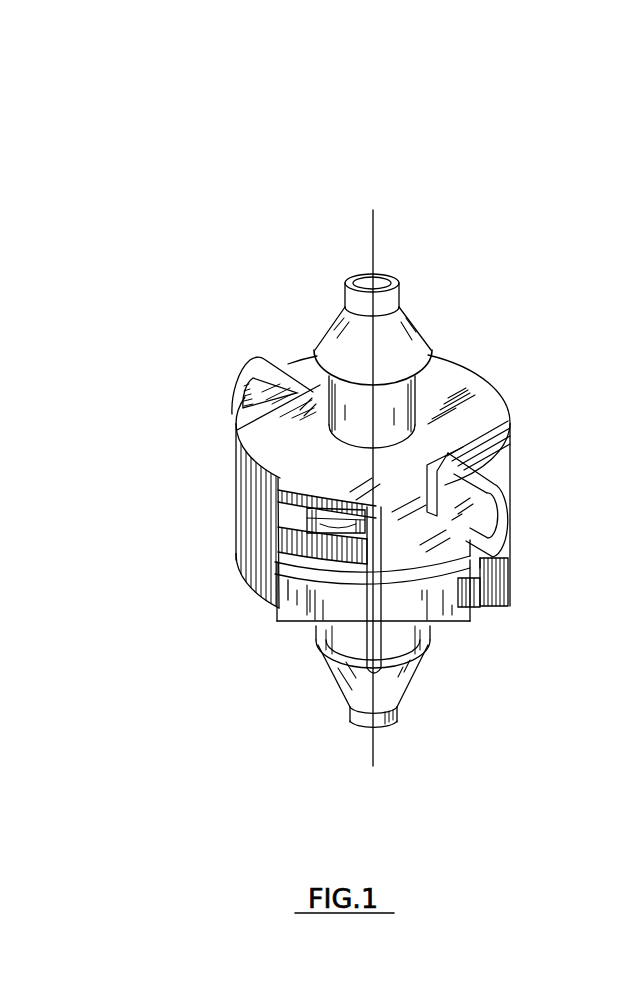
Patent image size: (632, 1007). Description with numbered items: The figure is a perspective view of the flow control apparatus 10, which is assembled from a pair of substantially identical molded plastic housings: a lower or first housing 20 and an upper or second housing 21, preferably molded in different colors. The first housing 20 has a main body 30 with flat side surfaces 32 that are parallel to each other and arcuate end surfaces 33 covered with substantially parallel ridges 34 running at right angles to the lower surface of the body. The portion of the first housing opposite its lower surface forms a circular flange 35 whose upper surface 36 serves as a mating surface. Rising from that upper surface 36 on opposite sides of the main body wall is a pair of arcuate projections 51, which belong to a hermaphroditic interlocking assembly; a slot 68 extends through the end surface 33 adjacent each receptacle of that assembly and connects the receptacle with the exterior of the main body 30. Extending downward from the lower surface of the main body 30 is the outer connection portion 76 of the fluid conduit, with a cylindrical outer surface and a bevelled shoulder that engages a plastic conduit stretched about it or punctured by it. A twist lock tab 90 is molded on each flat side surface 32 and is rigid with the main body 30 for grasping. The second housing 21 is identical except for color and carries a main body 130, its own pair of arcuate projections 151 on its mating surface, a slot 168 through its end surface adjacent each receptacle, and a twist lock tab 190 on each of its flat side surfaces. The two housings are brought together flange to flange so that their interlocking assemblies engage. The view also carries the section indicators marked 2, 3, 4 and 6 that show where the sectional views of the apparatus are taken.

The flow control apparatus 10 is at (470, 357).
The first housing 20 is at (244, 606).
The second housing 21 is at (496, 364).
The main body 30 is at (262, 615).
The flat side surfaces 32 is at (304, 600).
The arcuate end surfaces 33 is at (250, 570).
The ridges 34 is at (247, 543).
The circular flange 35 is at (285, 615).
The upper surface 36 is at (421, 563).
The arcuate projections 51 is at (325, 511).
The slot 68 is at (486, 580).
The outer connection portion 76 is at (400, 700).
The twist lock tab 90 is at (367, 641).
The main body 130 is at (510, 437).
The arcuate projections 151 is at (490, 580).
The slot 168 is at (306, 496).
The twist lock tab 190 is at (258, 358).
The section line 2- 2 is at (403, 187).
The section line 3- 3 is at (519, 403).
The section line 4- 4 is at (233, 357).
The section line 6- 6 is at (602, 364).